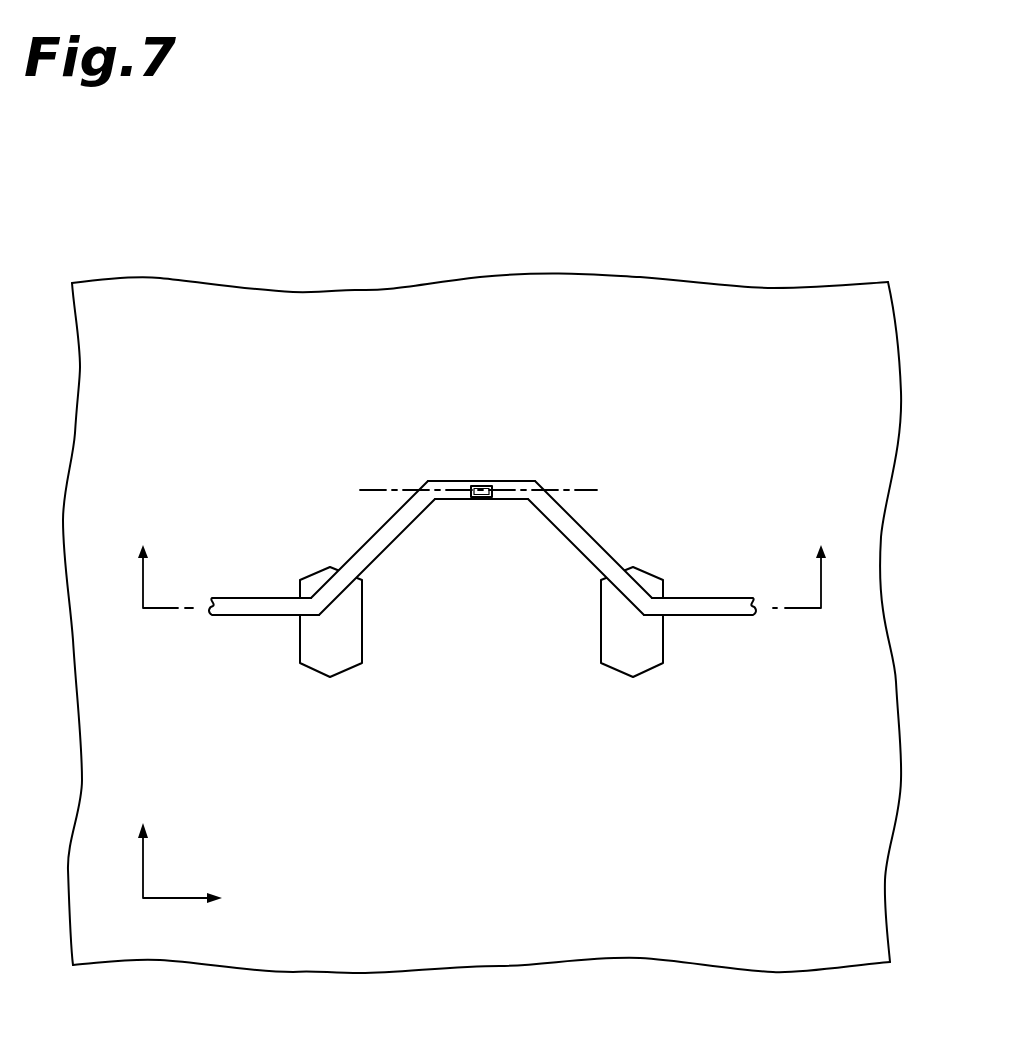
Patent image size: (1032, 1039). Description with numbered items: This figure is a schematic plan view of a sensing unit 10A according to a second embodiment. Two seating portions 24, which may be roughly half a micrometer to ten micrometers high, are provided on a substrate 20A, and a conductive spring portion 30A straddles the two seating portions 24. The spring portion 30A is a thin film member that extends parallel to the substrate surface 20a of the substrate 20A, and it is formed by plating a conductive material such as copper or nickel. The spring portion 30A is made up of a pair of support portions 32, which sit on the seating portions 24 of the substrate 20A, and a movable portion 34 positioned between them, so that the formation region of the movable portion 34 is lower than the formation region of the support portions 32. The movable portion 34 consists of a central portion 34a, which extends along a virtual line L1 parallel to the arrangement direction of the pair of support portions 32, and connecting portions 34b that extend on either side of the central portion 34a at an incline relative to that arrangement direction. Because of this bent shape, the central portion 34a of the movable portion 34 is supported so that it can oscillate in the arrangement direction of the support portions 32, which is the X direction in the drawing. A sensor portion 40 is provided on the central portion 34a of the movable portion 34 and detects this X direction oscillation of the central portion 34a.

The sensing unit 10A is at (814, 165).
The substrate 20A is at (697, 274).
The substrate surface 20a is at (363, 300).
The seating portion 24 is at (318, 662).
The spring portion 30A is at (340, 510).
The support portion 32 is at (312, 608).
The movable portion 34 is at (566, 585).
The central portion 34a is at (455, 499).
The connecting portion 34b is at (385, 535).
The sensor portion 40 is at (483, 487).
The virtual line L1 is at (573, 488).